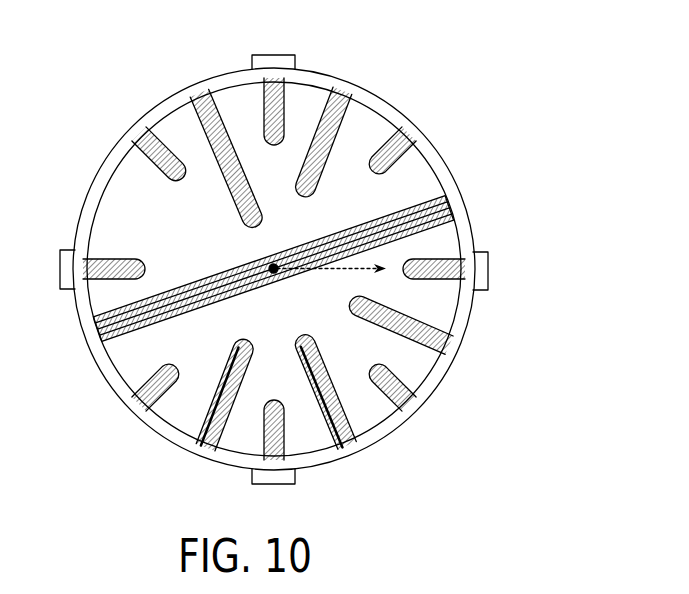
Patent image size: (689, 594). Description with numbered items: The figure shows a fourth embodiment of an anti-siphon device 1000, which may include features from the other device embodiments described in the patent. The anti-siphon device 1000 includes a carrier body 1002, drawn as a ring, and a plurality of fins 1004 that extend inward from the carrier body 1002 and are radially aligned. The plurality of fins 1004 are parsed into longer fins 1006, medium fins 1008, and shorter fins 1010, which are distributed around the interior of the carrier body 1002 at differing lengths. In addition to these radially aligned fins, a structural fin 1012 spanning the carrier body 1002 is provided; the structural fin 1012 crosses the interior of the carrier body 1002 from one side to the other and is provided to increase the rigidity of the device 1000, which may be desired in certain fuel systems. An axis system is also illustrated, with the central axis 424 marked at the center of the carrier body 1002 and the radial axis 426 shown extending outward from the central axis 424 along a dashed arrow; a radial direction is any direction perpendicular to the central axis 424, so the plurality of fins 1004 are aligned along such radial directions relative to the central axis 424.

The anti-siphon device 1000 is at (497, 53).
The carrier body 1002 is at (442, 158).
The plurality of fins 1004 is at (391, 154).
The longer fins 1006 is at (252, 218).
The medium fins 1008 is at (188, 216).
The shorter fins 1010 is at (141, 277).
The structural fin 1012 is at (243, 291).
The central axis 424 is at (270, 263).
The radial axis 426 is at (327, 269).